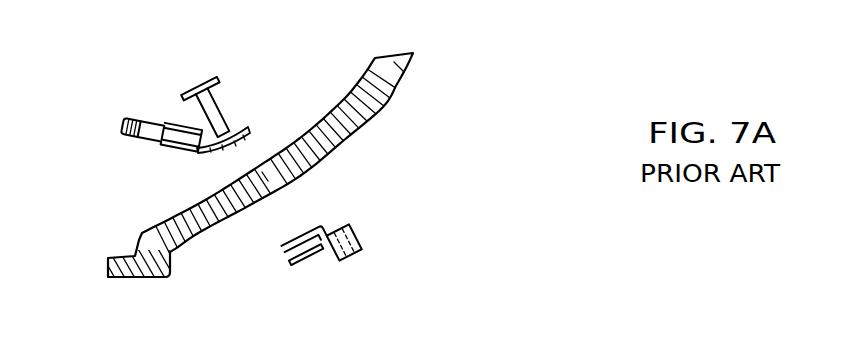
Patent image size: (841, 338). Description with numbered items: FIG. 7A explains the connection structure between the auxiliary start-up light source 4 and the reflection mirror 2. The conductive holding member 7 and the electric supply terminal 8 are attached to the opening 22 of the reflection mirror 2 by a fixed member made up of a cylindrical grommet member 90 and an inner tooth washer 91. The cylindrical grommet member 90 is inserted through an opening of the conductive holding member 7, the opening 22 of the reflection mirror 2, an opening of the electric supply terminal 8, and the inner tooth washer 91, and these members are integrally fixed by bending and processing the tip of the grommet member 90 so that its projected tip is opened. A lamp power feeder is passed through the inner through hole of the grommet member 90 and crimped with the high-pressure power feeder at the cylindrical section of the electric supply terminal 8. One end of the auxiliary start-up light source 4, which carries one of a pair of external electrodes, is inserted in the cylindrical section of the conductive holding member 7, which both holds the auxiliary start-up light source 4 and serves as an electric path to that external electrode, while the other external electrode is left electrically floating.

The reflection mirror 2 is at (395, 92).
The auxiliary start-up light source 4 is at (153, 137).
The conductive holding member 7 is at (198, 152).
The electric supply terminal 8 is at (352, 226).
The opening 22 is at (260, 182).
The cylindrical grommet member 90 is at (224, 122).
The inner tooth washer 91 is at (290, 267).